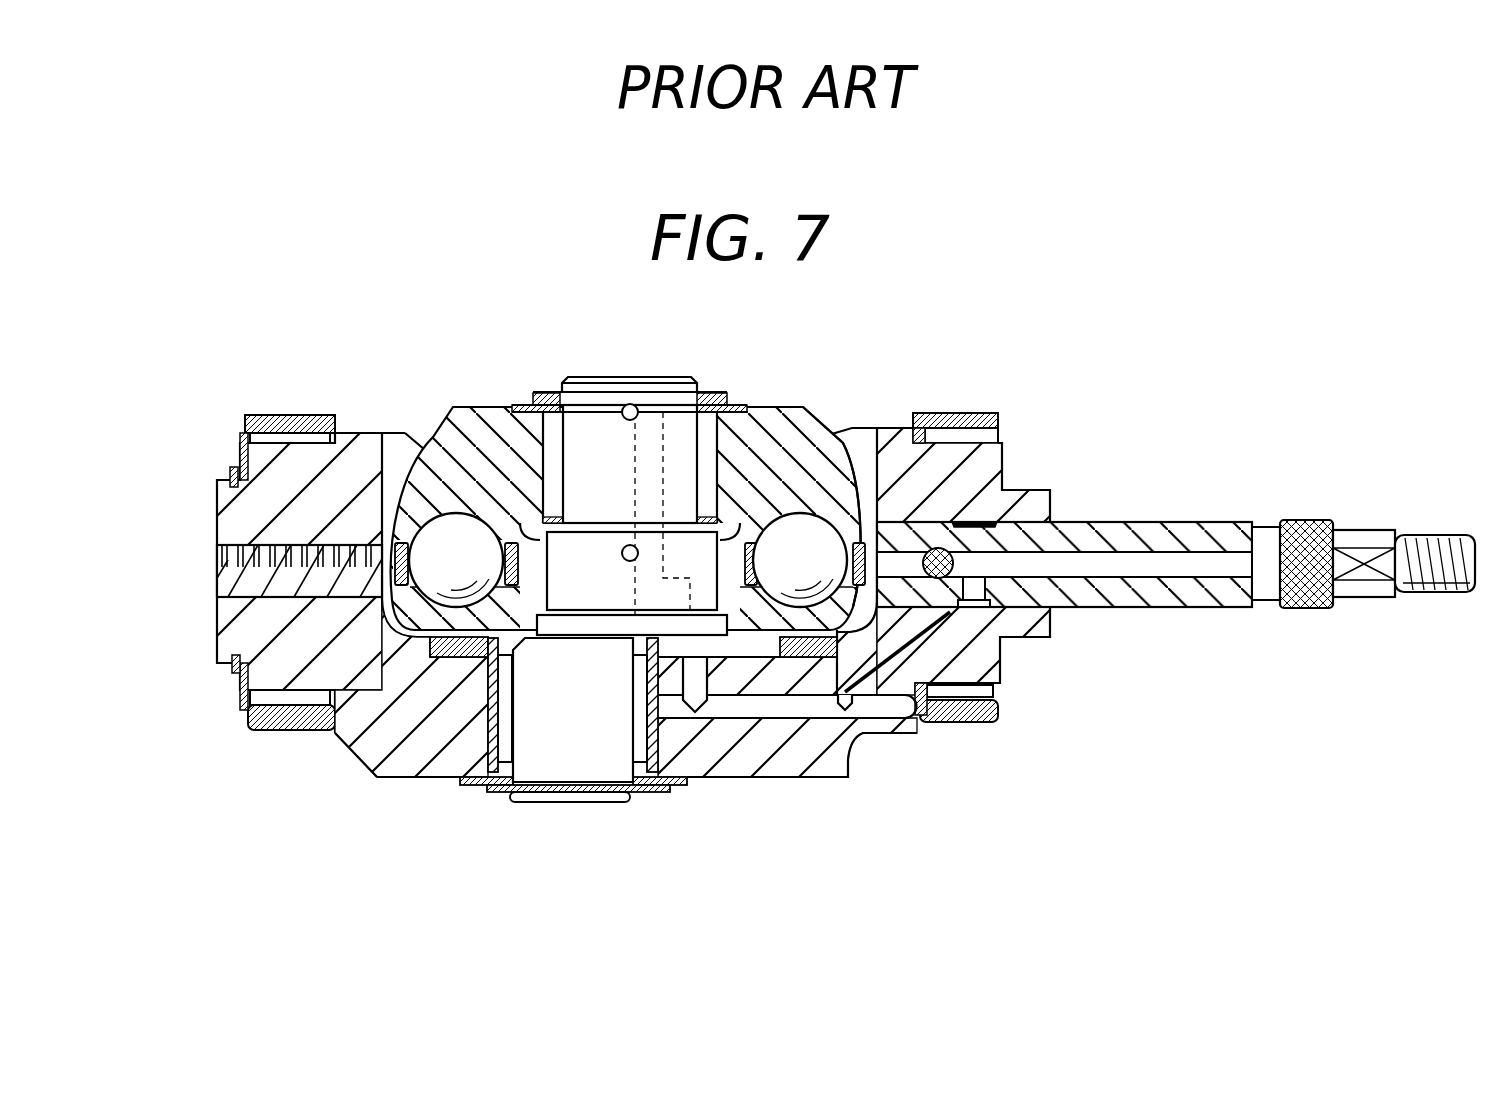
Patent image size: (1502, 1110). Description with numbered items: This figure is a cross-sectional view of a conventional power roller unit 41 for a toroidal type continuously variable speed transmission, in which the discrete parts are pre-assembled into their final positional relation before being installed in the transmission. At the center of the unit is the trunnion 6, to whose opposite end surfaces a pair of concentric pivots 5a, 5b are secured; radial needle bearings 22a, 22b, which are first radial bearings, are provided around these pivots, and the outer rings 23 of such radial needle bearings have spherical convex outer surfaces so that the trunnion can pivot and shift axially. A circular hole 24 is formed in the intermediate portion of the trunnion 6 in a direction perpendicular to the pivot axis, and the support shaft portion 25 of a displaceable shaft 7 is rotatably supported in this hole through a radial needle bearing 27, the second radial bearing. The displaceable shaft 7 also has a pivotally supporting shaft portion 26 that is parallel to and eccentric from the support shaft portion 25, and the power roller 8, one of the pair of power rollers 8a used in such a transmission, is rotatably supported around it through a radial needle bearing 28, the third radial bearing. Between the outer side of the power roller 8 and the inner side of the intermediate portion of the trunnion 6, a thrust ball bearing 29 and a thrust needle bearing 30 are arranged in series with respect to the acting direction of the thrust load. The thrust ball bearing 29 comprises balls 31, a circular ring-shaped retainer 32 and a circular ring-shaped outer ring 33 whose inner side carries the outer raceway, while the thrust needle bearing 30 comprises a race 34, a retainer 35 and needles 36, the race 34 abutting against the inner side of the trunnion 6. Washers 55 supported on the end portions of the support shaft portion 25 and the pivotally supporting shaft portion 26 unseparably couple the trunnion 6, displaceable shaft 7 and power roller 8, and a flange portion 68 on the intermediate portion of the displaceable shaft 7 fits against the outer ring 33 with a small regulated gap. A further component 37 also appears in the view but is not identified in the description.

The pivot 5a is at (990, 650).
The pivot 5b is at (237, 528).
The trunnion 6 is at (370, 773).
The displaceable shaft 7 is at (603, 765).
The power roller 8 is at (755, 420).
The power roller 8a is at (830, 420).
The radial needle bearing 22a is at (985, 412).
The radial needle bearing 22b is at (263, 437).
The outer ring 23 is at (297, 440).
The circular hole 24 is at (490, 722).
The support shaft portion 25 is at (545, 768).
The pivotally supporting shaft portion 26 is at (600, 420).
The radial needle bearing 27 is at (643, 715).
The radial needle bearing 28 is at (715, 410).
The thrust ball bearing 29 is at (852, 700).
The thrust needle bearing 30 is at (445, 660).
The ball 31 is at (447, 520).
The retainer 32 is at (393, 562).
The outer ring 33 is at (380, 735).
The race 34 is at (820, 610).
The retainer 35 is at (785, 640).
The needle 36 is at (468, 657).
The rack shaft 37 is at (1233, 607).
The power roller unit 41 is at (986, 539).
The washer 55 is at (525, 400).
The flange portion 68 is at (713, 613).